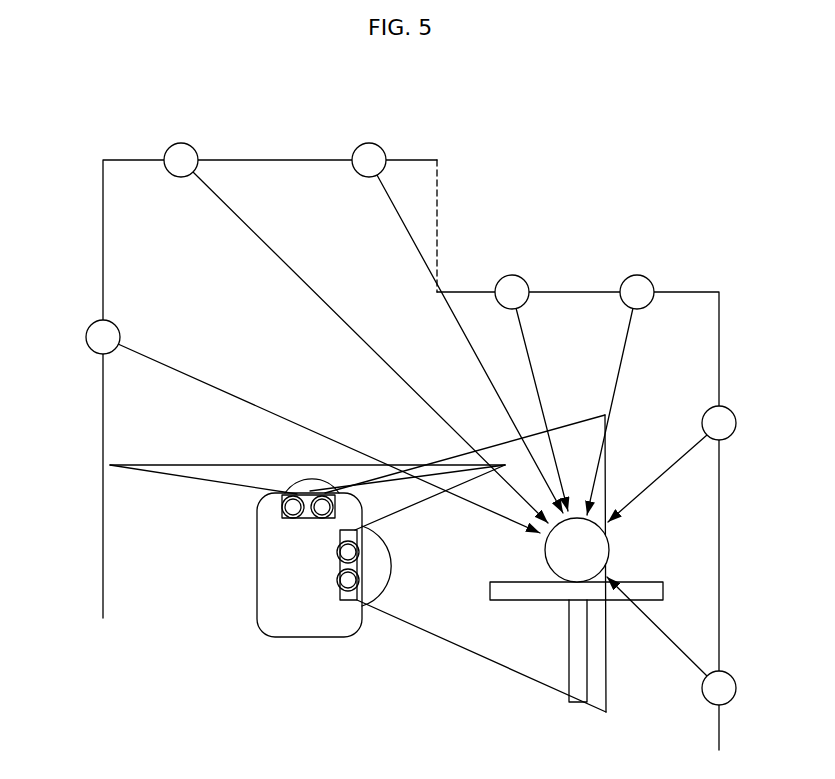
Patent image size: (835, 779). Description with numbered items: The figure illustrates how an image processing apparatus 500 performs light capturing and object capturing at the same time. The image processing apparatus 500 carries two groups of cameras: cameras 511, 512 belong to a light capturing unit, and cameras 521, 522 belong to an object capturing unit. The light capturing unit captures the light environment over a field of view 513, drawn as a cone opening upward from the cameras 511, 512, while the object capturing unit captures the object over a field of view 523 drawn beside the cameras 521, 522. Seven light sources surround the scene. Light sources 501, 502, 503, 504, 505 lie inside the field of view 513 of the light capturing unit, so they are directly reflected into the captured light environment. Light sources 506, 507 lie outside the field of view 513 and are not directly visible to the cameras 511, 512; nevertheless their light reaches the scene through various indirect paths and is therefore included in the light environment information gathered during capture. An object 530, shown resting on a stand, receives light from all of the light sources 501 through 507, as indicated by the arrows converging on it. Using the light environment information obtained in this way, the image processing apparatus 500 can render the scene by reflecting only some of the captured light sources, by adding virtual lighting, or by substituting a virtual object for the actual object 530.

The image processing apparatus 500 is at (257, 618).
The light source 501 is at (88, 335).
The light source 502 is at (181, 143).
The light source 503 is at (369, 143).
The light source 504 is at (512, 275).
The light source 505 is at (637, 275).
The light source 506 is at (736, 423).
The light source 507 is at (736, 688).
The camera 511 is at (292, 518).
The camera 512 is at (322, 518).
The FoV of the light capturing unit 513 is at (307, 480).
The camera 521 is at (337, 553).
The camera 522 is at (348, 591).
The FoV of the object capturing unit 523 is at (395, 558).
The object 530 is at (610, 550).